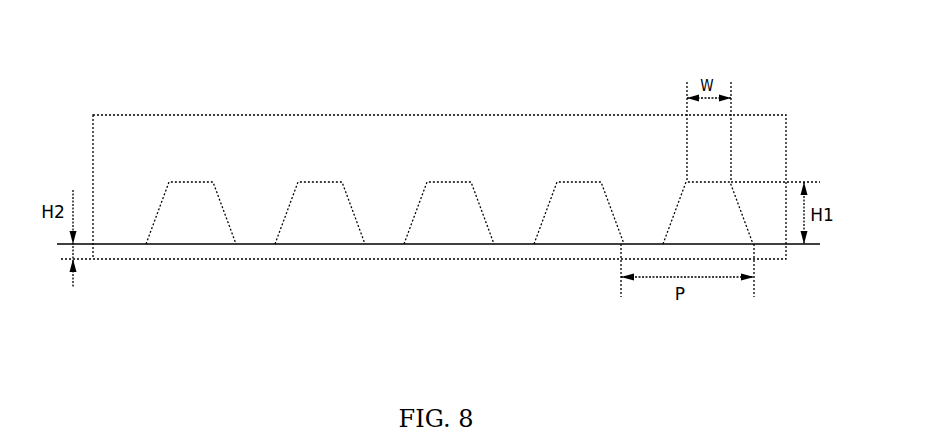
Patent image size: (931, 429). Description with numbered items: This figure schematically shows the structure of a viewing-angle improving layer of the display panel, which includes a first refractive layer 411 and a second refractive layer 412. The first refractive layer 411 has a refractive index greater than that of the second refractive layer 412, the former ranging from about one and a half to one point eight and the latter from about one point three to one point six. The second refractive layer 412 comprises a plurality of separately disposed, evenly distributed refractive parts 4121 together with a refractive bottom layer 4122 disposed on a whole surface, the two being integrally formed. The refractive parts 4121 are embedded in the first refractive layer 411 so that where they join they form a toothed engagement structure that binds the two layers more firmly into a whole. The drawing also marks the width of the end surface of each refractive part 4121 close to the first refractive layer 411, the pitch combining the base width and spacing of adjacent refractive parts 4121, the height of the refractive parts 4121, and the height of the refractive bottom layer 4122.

The first refractive layer 411 is at (390, 143).
The second refractive layer 412 is at (438, 277).
The refractive parts 4121 is at (323, 227).
The refractive bottom layer 4122 is at (313, 322).